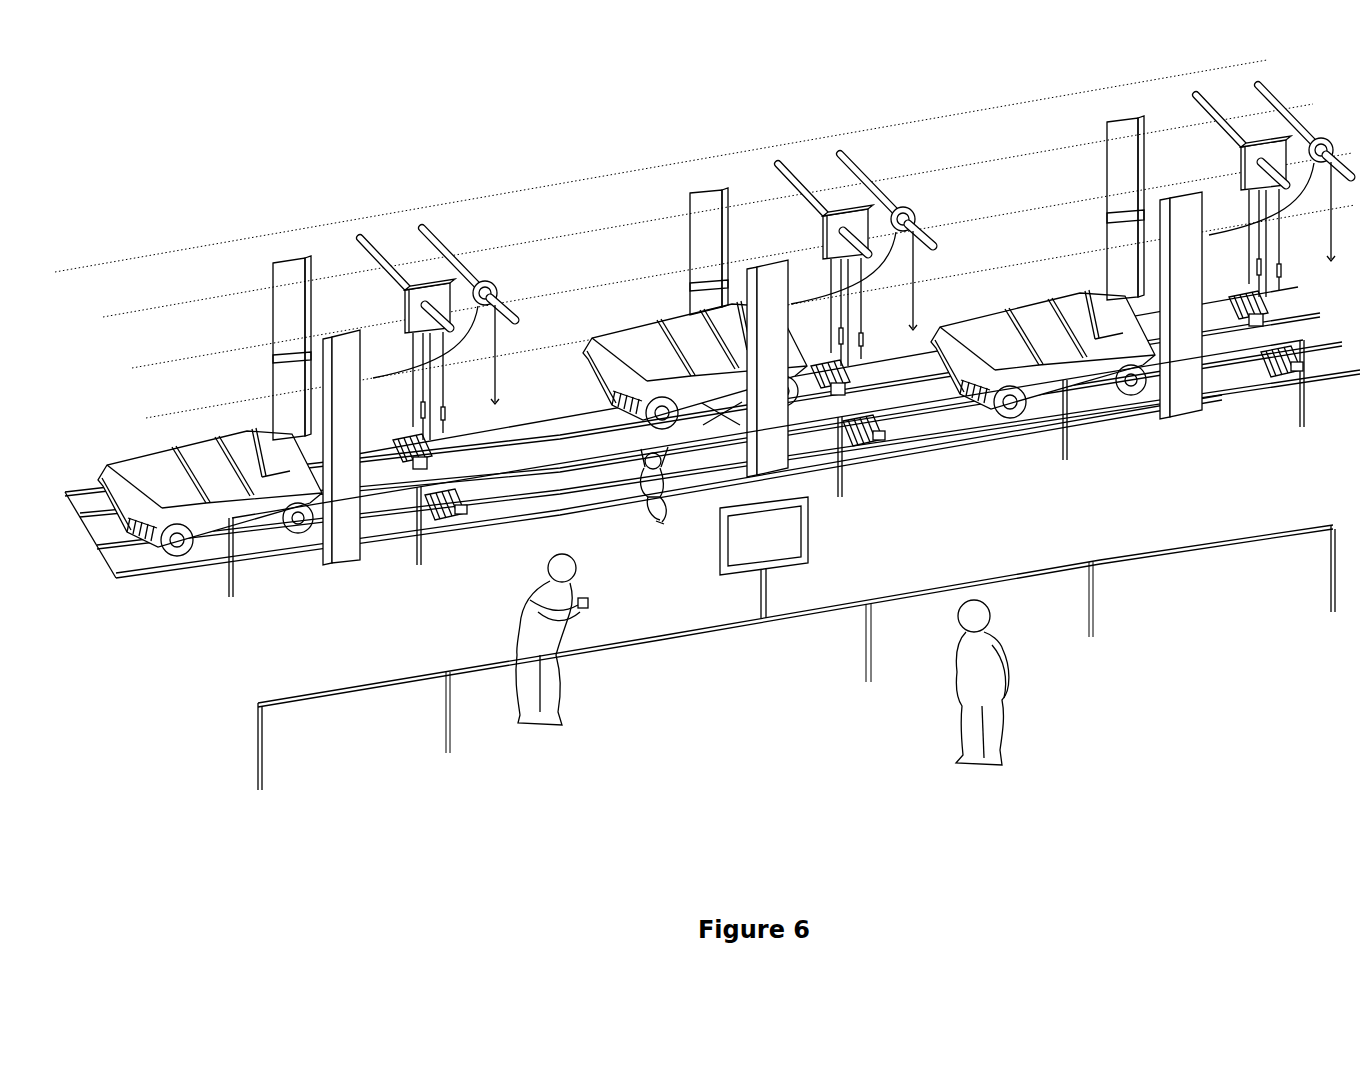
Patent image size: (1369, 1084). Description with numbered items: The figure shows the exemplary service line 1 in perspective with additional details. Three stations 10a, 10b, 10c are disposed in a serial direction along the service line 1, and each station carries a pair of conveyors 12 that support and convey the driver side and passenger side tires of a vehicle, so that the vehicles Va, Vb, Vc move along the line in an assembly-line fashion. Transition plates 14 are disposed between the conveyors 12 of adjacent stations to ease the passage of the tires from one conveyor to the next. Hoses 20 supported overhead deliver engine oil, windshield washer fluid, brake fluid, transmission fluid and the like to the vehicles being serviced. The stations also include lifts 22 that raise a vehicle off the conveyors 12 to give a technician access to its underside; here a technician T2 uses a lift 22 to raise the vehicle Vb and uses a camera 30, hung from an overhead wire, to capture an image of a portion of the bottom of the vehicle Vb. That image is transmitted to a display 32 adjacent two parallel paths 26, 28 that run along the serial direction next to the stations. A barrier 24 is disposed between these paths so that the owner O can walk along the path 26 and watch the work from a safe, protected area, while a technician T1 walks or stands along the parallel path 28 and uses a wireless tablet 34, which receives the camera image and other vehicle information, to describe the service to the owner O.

The service line 1 is at (423, 160).
The first station 10a is at (1113, 436).
The second station 10b is at (707, 509).
The third station 10c is at (283, 587).
The conveyor 12 is at (83, 503).
The transition plate 14 is at (445, 513).
The hoses 20 is at (400, 330).
The lift 22 is at (713, 208).
The barrier 24 is at (1155, 558).
The path 26 is at (1138, 728).
The parallel path 28 is at (1128, 520).
The camera 30 is at (672, 452).
The display 32 is at (782, 544).
The wireless tablet 34 is at (583, 600).
The technician T1 is at (535, 603).
The technician T2 is at (642, 505).
The owner O is at (987, 647).
The vehicle Va is at (988, 337).
The vehicle Vb is at (620, 350).
The vehicle Vc is at (150, 470).